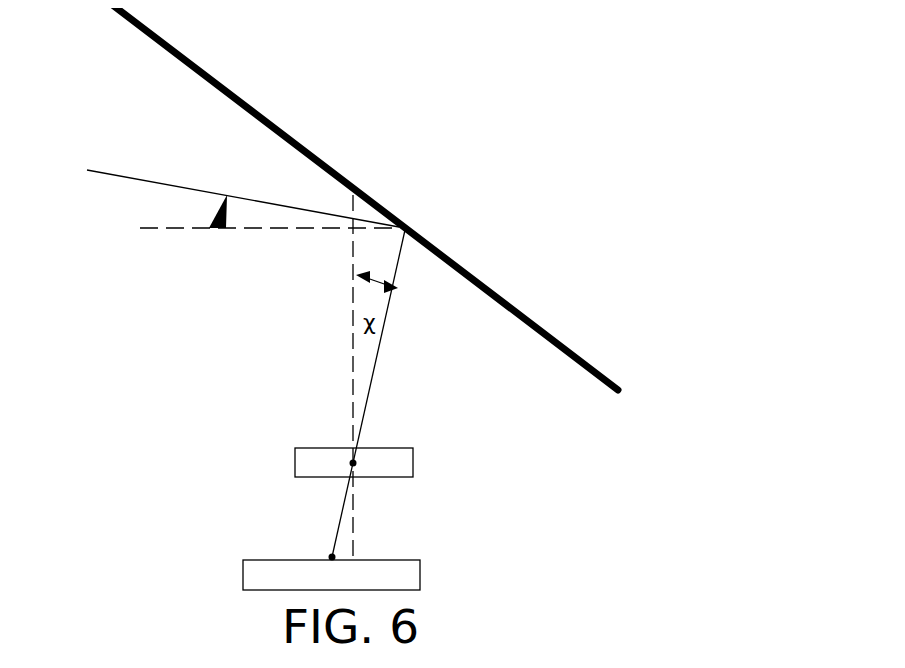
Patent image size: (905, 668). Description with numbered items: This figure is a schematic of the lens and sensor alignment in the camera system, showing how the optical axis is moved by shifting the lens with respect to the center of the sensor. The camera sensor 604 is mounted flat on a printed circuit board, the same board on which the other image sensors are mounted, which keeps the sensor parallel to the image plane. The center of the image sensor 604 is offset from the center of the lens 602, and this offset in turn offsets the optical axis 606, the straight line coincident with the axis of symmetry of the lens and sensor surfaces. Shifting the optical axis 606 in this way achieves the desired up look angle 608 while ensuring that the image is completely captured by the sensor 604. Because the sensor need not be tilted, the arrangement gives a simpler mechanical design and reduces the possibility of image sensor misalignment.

The lens 602 is at (390, 445).
The image sensor 604 is at (418, 560).
The optical axis 606 is at (400, 314).
The up look angle β 608 is at (185, 212).